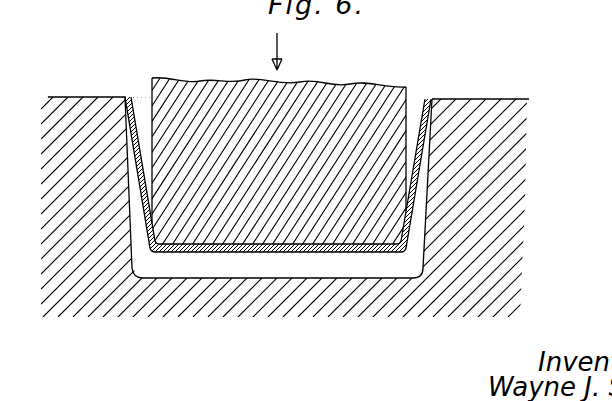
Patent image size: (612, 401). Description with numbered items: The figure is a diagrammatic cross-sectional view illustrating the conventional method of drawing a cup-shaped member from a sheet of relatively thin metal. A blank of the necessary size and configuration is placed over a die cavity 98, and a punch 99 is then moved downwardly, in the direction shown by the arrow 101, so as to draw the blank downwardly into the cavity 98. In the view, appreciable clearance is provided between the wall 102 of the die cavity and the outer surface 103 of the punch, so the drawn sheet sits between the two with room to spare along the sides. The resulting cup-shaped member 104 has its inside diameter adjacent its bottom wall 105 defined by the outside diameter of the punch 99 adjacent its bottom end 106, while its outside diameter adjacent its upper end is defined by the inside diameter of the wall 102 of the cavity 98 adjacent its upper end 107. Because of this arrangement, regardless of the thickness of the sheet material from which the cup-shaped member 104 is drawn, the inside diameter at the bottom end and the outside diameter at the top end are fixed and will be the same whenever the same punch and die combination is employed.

The die cavity 98 is at (413, 113).
The punch 99 is at (342, 82).
The arrow 101 is at (281, 48).
The wall of the die cavity 102 is at (421, 262).
The outer surface of the punch 103 is at (152, 128).
The cup-shaped member 104 is at (413, 192).
The bottom wall 105 is at (190, 255).
The bottom end of the punch 106 is at (268, 222).
The upper end of the cavity wall 107 is at (454, 112).